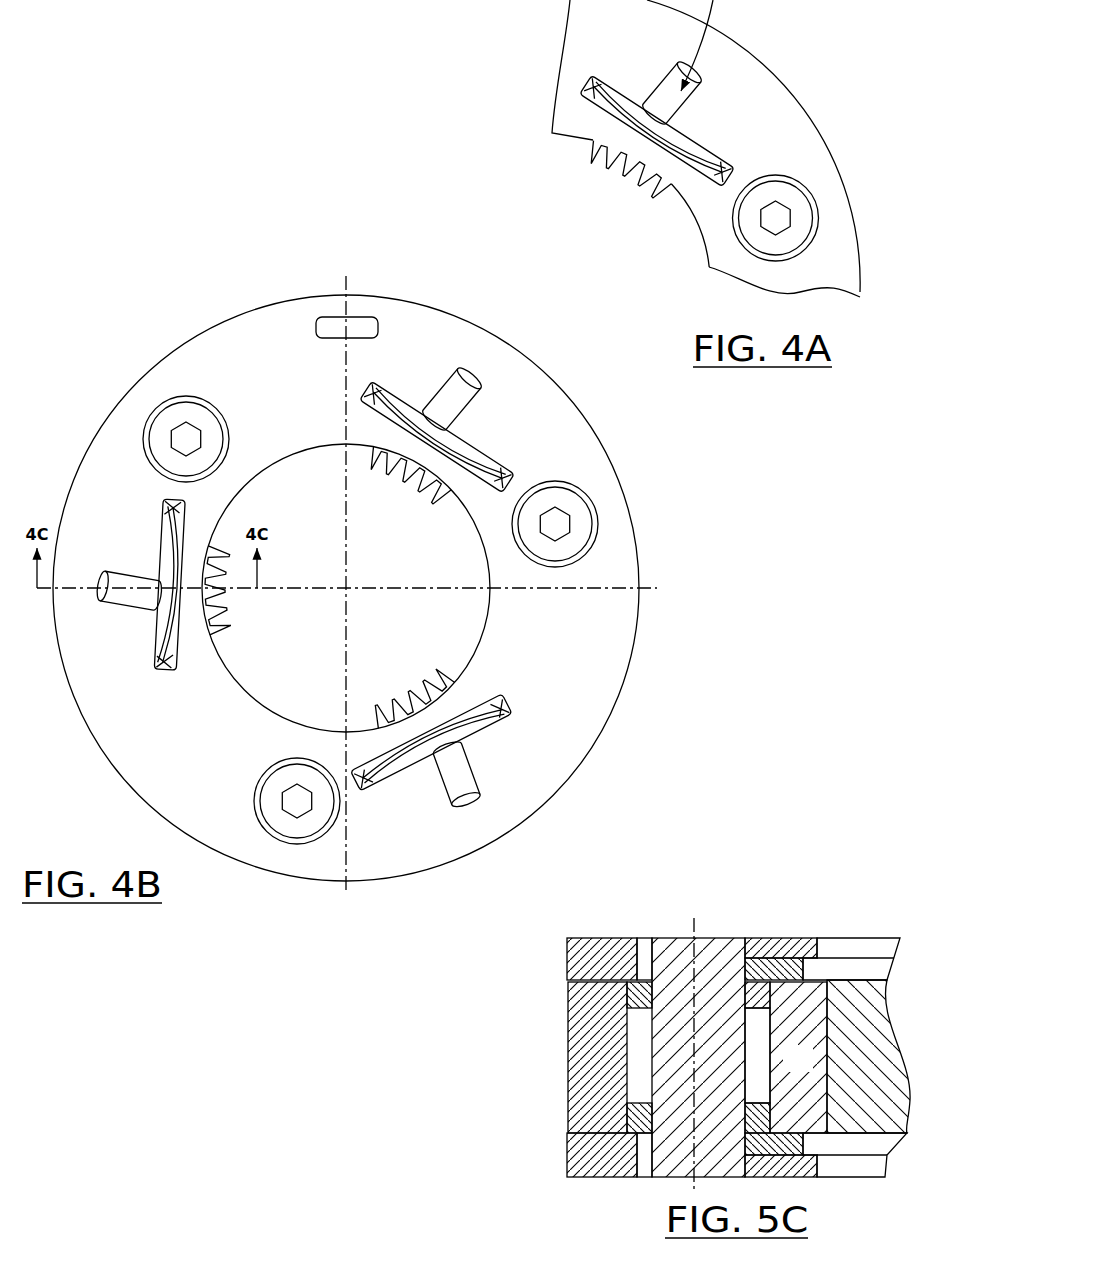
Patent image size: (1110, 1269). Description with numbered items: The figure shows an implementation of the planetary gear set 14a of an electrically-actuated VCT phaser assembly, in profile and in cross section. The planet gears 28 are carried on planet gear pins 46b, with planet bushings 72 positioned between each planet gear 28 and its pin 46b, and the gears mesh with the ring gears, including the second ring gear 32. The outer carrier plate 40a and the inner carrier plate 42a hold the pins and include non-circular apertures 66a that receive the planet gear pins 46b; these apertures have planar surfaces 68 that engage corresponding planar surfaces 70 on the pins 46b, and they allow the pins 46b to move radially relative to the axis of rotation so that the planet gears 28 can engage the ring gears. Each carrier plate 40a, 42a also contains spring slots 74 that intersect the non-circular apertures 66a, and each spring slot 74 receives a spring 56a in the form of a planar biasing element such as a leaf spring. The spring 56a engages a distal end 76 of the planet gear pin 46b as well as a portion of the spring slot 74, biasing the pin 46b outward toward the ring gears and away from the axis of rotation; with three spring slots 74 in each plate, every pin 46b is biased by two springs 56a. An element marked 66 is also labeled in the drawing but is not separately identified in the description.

In FIG. 4B, the planetary gear set 14a is at (339, 586).
In FIG. 4A, the planet gears 28 is at (619, 173).
In FIG. 4B, the planet gears 28 is at (418, 499).
In FIG. 5C, the planet gears 28 is at (809, 1070).
In FIG. 5C, the second ring gear 32 is at (871, 1031).
In FIG. 4A, the outer carrier plate 40a is at (723, 90).
In FIG. 4B, the outer carrier plate 40a is at (520, 660).
In FIG. 5C, the inner carrier plate 42a is at (795, 931).
In FIG. 4B, the planet gear pins 46b is at (260, 591).
In FIG. 5C, the planet gear pins 46b is at (723, 966).
In FIG. 4B, the spring 56a is at (401, 551).
In FIG. 4B, the aperture 66 is at (253, 591).
In FIG. 4A, the non-circular apertures 66a is at (700, 107).
In FIG. 4B, the non-circular apertures 66a is at (148, 640).
In FIG. 5C, the non-circular apertures 66a is at (750, 969).
In FIG. 4A, the planar surfaces 68 is at (590, 78).
In FIG. 4B, the planar surfaces 68 is at (422, 400).
In FIG. 4A, the planar surfaces 70 is at (718, 123).
In FIG. 4B, the planar surfaces 70 is at (253, 591).
In FIG. 5C, the planet bushings 72 is at (632, 996).
In FIG. 4A, the spring slots 74 is at (688, 104).
In FIG. 4B, the spring slots 74 is at (401, 551).
In FIG. 5C, the distal end 76 is at (680, 935).